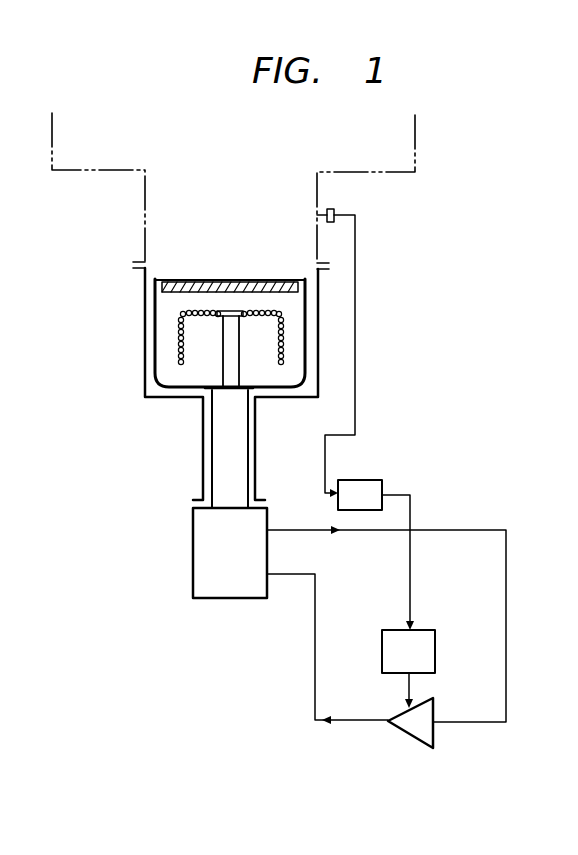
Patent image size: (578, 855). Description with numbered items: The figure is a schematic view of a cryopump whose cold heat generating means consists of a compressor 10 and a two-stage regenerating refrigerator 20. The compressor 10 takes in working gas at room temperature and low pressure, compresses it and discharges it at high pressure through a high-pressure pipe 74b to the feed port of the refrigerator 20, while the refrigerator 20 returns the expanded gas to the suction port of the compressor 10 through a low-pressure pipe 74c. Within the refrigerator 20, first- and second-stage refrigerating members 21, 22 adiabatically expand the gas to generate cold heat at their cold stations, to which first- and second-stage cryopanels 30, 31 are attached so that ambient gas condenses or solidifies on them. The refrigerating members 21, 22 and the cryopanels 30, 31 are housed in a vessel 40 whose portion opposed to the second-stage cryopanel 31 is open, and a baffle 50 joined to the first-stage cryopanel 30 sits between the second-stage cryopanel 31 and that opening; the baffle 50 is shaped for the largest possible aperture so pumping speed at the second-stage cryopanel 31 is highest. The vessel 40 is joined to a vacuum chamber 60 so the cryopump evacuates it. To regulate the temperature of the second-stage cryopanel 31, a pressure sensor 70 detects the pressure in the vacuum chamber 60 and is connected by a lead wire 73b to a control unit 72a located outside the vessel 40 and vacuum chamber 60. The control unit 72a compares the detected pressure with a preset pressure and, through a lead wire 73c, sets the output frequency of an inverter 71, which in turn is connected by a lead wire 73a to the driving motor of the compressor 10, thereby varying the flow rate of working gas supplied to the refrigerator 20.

The compressor 10 is at (435, 737).
The two-stage regenerating refrigerator 20 is at (180, 521).
The first-stage refrigerating member 21 is at (212, 441).
The second-stage refrigerating member 22 is at (223, 348).
The first-stage cryopanel 30 is at (155, 372).
The second-stage cryopanel 31 is at (180, 340).
The vessel 40 is at (145, 322).
The baffle 50 is at (191, 281).
The vacuum chamber 60 is at (416, 141).
The pressure sensor 70 is at (334, 211).
The inverter 71 is at (432, 630).
The control unit 72a is at (370, 480).
The lead wire 73a is at (409, 686).
The lead wire 73b is at (357, 322).
The lead wire 73c is at (413, 508).
The high-pressure pipe 74b is at (315, 633).
The low-pressure pipe 74c is at (507, 645).